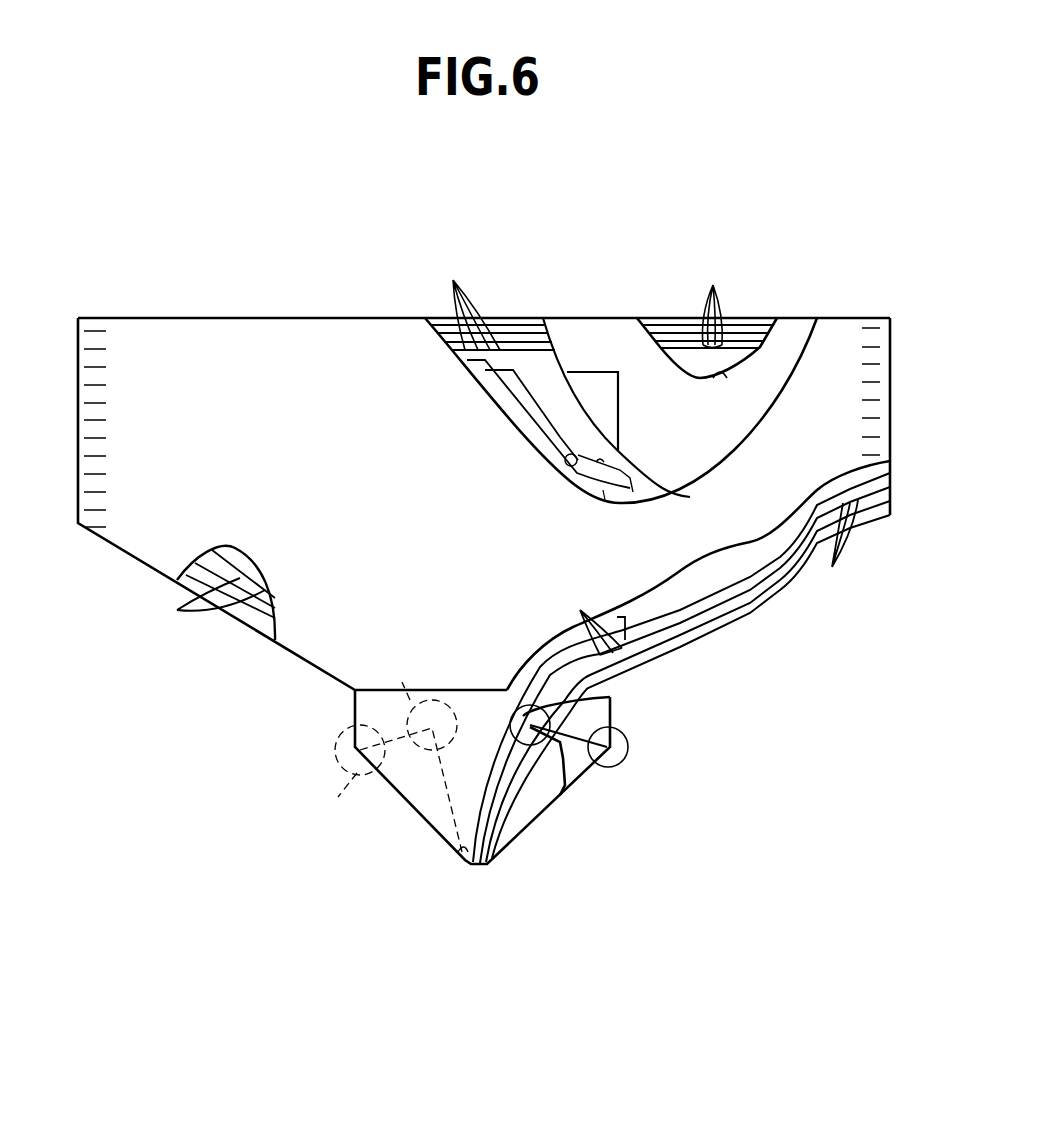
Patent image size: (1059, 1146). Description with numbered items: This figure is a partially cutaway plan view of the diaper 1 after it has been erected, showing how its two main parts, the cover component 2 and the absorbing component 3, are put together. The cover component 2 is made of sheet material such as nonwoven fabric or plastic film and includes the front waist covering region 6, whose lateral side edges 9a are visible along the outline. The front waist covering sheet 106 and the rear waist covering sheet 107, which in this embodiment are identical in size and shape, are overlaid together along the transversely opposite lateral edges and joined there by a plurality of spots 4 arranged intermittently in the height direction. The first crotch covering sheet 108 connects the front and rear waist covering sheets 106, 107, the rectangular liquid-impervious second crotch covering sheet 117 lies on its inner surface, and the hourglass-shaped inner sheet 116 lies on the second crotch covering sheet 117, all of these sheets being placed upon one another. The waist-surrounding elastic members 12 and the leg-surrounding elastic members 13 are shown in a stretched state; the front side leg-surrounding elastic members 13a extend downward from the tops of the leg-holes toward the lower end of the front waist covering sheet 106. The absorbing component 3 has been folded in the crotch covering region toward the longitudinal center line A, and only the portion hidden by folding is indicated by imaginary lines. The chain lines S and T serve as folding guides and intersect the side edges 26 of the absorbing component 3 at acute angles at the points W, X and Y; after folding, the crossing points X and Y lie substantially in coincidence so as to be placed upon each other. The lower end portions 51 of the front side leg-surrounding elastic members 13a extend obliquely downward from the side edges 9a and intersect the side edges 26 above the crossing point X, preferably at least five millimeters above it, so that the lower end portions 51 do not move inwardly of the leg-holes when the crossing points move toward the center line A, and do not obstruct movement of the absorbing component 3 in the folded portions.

The diaper 1 is at (650, 240).
The cover component 2 is at (254, 315).
The absorbing component 3 is at (628, 416).
The spots 4 is at (868, 382).
The front waist covering region 6 is at (139, 538).
The side edges of the front waist covering region 9a is at (890, 467).
The waist-surrounding elastic members 12 is at (578, 297).
The leg-surrounding elastic members 13 is at (520, 590).
The front side leg-surrounding elastic members 13a is at (179, 608).
The side edges of the absorbing component 26 is at (612, 708).
The lower end portions 51 is at (580, 612).
The front waist covering sheet 106 is at (800, 332).
The rear waist covering sheet 107 is at (757, 318).
The first crotch covering sheet 108 is at (572, 476).
The inner sheet 116 is at (721, 378).
The second crotch covering sheet 117 is at (605, 488).
The longitudinal center line A is at (495, 285).
The crossing point W is at (583, 826).
The chain line T is at (587, 773).
The chain line S is at (537, 820).
The crossing point X is at (312, 804).
The crossing point Y is at (630, 750).